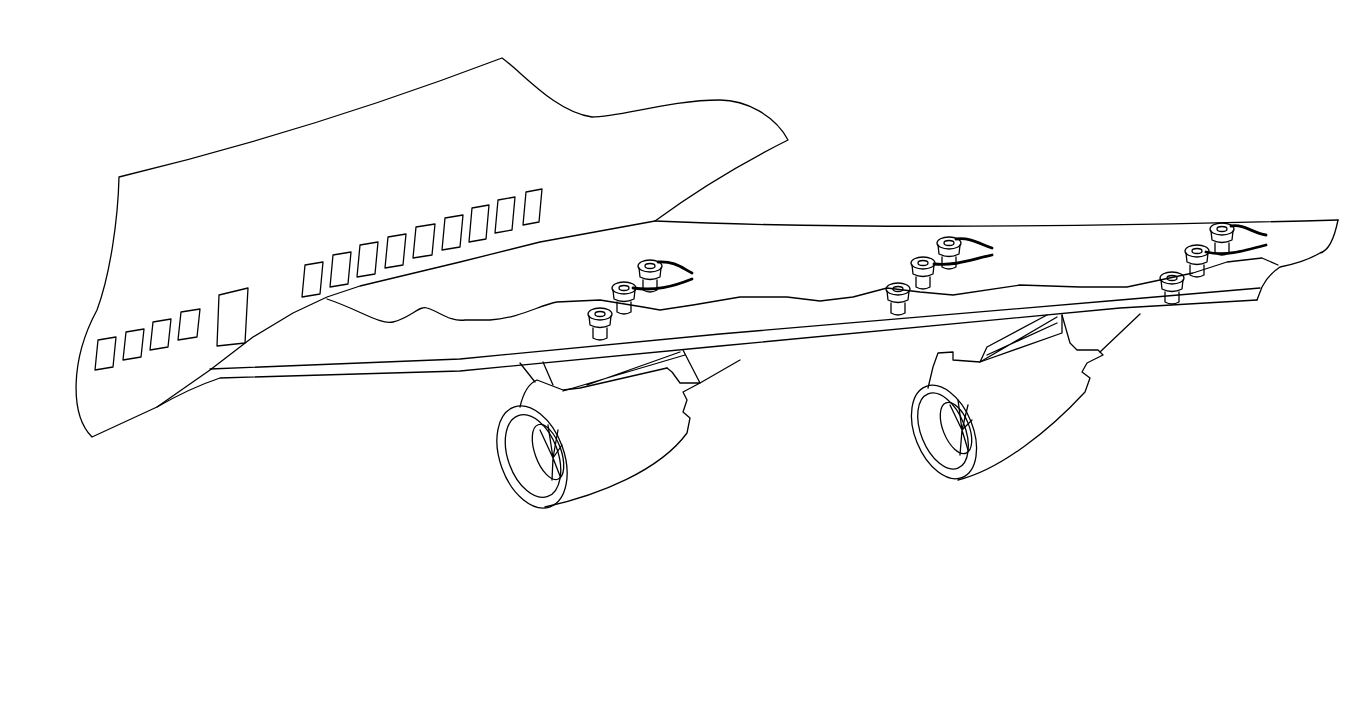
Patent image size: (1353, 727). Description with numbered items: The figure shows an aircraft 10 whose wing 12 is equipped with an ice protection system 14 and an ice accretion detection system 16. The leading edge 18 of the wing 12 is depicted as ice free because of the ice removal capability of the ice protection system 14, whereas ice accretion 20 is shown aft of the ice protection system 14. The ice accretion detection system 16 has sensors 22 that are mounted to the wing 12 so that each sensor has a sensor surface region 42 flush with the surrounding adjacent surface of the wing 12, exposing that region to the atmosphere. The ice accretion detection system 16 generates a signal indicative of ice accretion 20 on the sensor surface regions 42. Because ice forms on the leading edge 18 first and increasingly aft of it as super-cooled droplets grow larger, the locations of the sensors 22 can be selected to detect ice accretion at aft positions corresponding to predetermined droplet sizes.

The aircraft 10 is at (999, 148).
The wing 12 is at (807, 238).
The ice protection system 14 is at (380, 375).
The ice accretion detection system 16 is at (652, 253).
The leading edge 18 is at (828, 340).
The ice accretion 20 is at (1035, 294).
The sensors 22 is at (588, 316).
The sensor surface region 42 is at (963, 256).